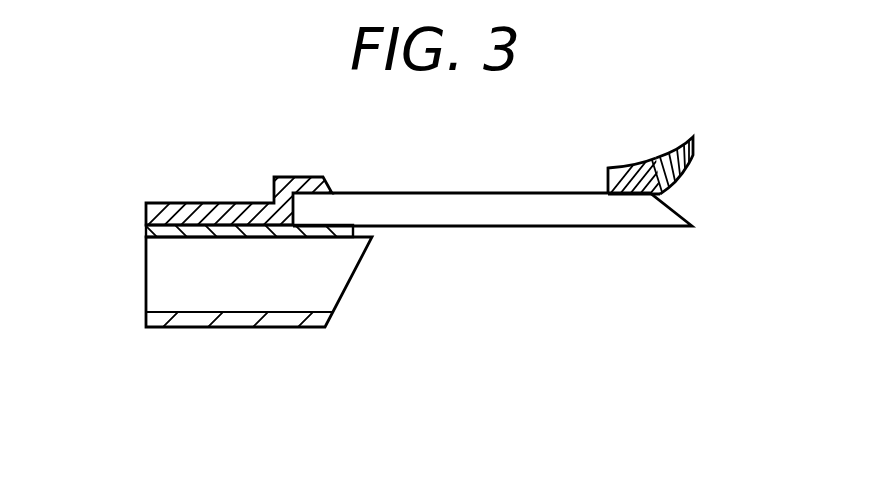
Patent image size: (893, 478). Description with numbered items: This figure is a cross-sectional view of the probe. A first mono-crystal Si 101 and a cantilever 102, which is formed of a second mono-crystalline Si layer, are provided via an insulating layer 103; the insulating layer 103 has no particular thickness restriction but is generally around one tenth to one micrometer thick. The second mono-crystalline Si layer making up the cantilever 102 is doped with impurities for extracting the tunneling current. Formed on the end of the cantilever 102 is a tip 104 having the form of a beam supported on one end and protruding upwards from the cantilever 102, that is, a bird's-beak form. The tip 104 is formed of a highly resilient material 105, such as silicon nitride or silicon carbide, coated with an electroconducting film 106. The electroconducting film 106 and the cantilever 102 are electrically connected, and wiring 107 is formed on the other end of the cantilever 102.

The first mono-crystal Si 101 is at (333, 283).
The cantilever 102 is at (463, 203).
The insulating layer 103 is at (146, 227).
The tip 104 is at (709, 136).
The highly resilient material 105 is at (688, 166).
The electroconducting film 106 is at (693, 150).
The wiring 107 is at (197, 204).